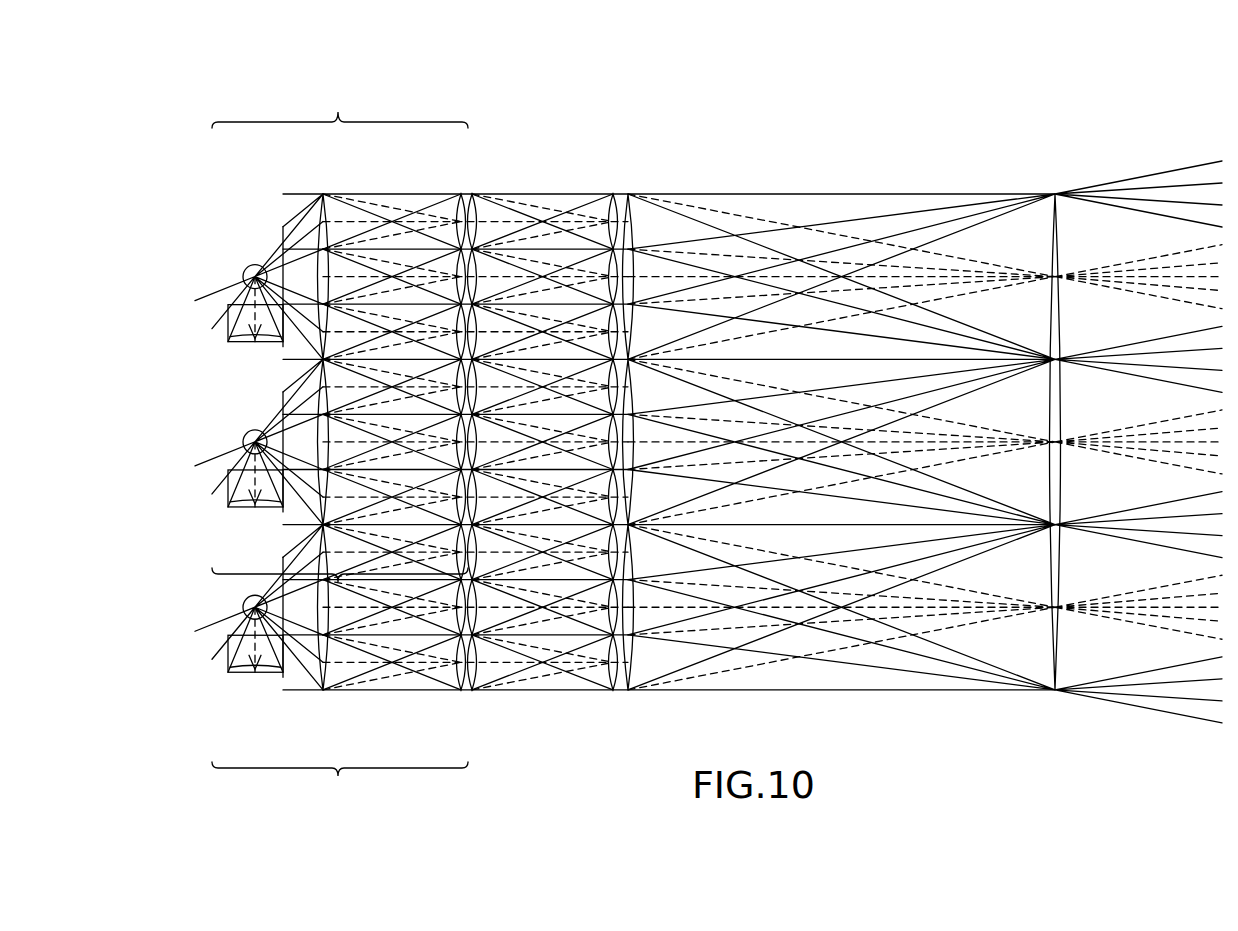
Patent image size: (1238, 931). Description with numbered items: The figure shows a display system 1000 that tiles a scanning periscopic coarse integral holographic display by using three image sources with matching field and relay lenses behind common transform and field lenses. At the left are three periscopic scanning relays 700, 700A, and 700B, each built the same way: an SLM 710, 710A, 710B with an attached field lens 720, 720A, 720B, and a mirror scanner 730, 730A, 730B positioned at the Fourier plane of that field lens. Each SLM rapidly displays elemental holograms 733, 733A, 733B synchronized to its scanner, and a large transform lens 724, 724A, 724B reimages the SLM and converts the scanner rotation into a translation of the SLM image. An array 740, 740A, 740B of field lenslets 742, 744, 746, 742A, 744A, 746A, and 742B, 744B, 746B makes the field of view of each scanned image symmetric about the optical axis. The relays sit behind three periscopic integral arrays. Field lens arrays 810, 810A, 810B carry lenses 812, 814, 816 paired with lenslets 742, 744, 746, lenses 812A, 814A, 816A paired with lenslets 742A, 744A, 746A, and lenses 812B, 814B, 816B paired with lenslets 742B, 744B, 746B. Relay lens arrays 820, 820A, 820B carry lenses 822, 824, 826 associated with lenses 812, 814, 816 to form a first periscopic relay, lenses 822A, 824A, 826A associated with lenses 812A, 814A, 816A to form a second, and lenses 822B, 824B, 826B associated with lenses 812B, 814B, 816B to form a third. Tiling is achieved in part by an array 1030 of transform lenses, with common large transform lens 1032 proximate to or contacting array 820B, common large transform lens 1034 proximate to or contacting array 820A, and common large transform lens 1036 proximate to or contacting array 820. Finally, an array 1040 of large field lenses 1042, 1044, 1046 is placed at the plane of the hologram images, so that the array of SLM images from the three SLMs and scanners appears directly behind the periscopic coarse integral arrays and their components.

The display system 1000 is at (198, 103).
The periscopic scanning relay 700 is at (340, 588).
The periscopic scanning relay 700A is at (340, 783).
The periscopic scanning relay 700B is at (340, 105).
The SLM 710 is at (276, 515).
The SLM 710A is at (283, 693).
The SLM 710B is at (276, 350).
The field lens 720 is at (224, 507).
The field lens 720A is at (224, 673).
The field lens 720B is at (224, 342).
The mirror scanner 730 is at (238, 438).
The mirror scanner 730A is at (238, 604).
The mirror scanner 730B is at (238, 273).
The large transform lens 724 is at (318, 527).
The large transform lens 724A is at (323, 693).
The large transform lens 724B is at (323, 190).
The elemental holograms 733 is at (385, 366).
The SLM images 733A is at (388, 530).
The SLM images 733B is at (388, 200).
The array of field lenslets 740 is at (452, 512).
The array of field lenslets 740A is at (461, 693).
The array of field lenslets 740B is at (461, 190).
The field lenslet 742 is at (440, 396).
The field lenslet 742A is at (440, 558).
The field lenslet 742B is at (440, 228).
The field lenslet 744 is at (440, 452).
The field lenslet 744A is at (440, 613).
The field lenslet 744B is at (440, 283).
The field lenslet 746 is at (445, 497).
The field lenslet 746A is at (440, 668).
The field lenslet 746B is at (440, 338).
The field lens array 810 is at (455, 480).
The field lens array 810A is at (480, 694).
The field lens array 810B is at (480, 190).
The lens 812 is at (480, 377).
The lens 812A is at (480, 542).
The lens 812B is at (480, 212).
The lens 814 is at (480, 431).
The lens 814A is at (480, 596).
The lens 814B is at (480, 266).
The lens 816 is at (480, 486).
The lens 816A is at (480, 651).
The lens 816B is at (480, 321).
The relay lens array 820 is at (622, 522).
The relay lens array 820A is at (613, 693).
The relay lens array 820B is at (613, 190).
The relay lens 822 is at (606, 395).
The relay lens 822A is at (606, 560).
The relay lens 822B is at (606, 230).
The relay lens 824 is at (606, 450).
The relay lens 824A is at (606, 615).
The relay lens 824B is at (606, 285).
The relay lens 826 is at (606, 505).
The relay lens 826A is at (606, 670).
The relay lens 826B is at (606, 340).
The array of transform lenses 1030 is at (632, 190).
The common large transform lens 1032 is at (641, 222).
The common large transform lens 1034 is at (641, 387).
The common large transform lens 1036 is at (641, 553).
The array of large field lenses 1040 is at (1062, 188).
The large field lens 1042 is at (1067, 246).
The large field lens 1044 is at (1067, 411).
The large field lens 1046 is at (1067, 575).